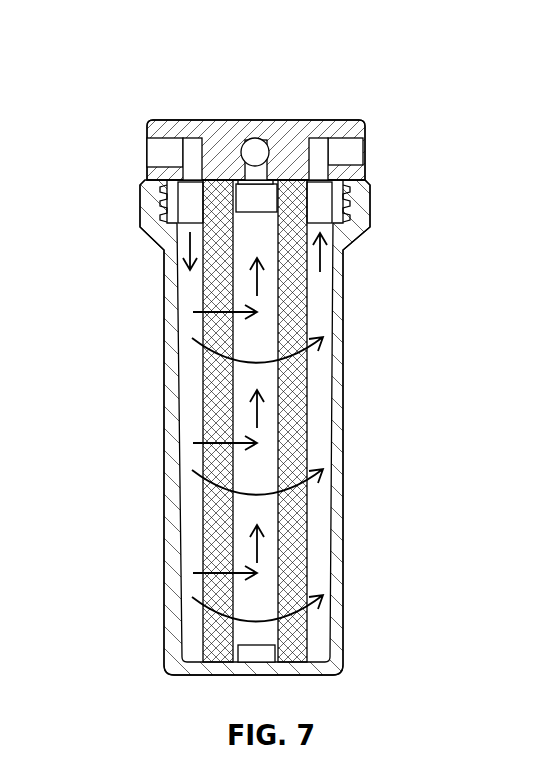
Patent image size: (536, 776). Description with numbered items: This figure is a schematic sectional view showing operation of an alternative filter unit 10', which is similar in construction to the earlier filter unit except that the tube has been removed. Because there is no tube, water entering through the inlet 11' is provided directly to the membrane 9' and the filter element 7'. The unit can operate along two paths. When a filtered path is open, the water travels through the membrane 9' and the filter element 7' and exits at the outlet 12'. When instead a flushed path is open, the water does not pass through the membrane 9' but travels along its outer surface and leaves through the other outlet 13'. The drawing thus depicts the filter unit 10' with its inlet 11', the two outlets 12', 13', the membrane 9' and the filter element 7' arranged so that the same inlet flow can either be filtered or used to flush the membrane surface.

The filter unit 10' is at (258, 343).
The inlet 11' is at (115, 159).
The outlet 12' is at (254, 107).
The outlet 13' is at (399, 159).
The filter element 7' is at (365, 421).
The membrane 9' is at (296, 427).